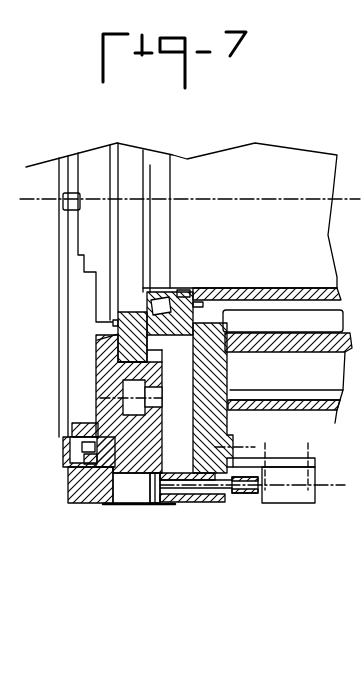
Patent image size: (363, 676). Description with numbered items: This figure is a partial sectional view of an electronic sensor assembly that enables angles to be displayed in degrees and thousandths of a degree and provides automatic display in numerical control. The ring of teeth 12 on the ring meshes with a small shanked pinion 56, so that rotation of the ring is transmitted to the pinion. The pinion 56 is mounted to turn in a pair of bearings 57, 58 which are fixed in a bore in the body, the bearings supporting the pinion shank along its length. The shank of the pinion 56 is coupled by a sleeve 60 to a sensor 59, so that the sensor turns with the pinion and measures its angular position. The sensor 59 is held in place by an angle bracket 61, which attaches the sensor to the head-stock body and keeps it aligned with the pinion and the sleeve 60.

The ring of teeth 12 is at (128, 478).
The small shanked pinion 56 is at (160, 488).
The bearing 57 is at (177, 503).
The bearing 58 is at (220, 503).
The sensor 59 is at (297, 498).
The sleeve 60 is at (248, 494).
The angle bracket 61 is at (340, 449).